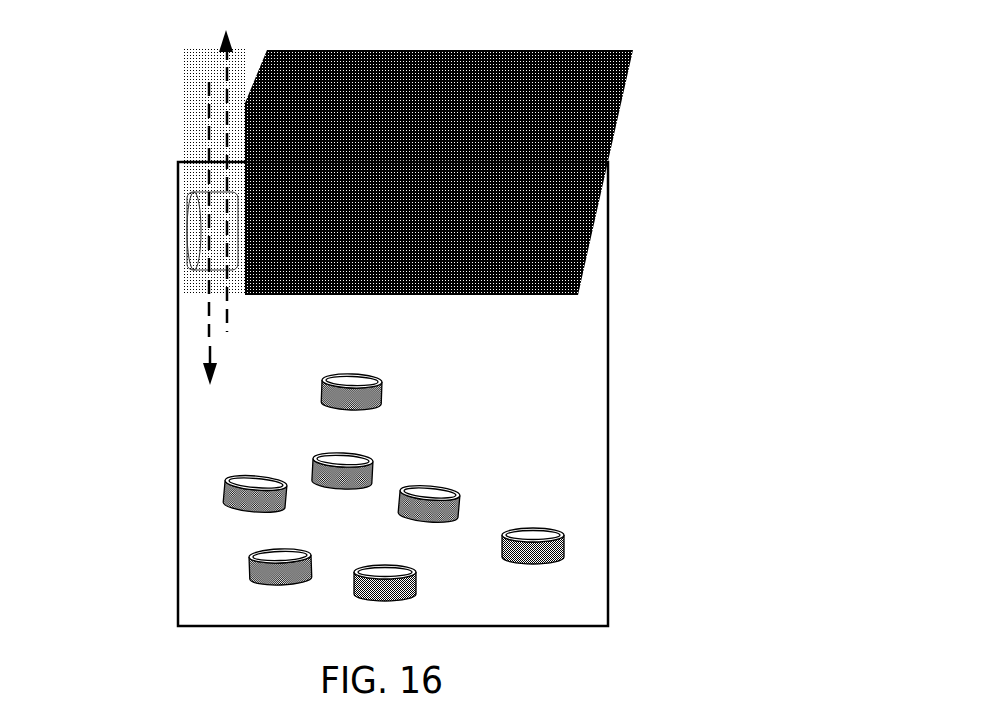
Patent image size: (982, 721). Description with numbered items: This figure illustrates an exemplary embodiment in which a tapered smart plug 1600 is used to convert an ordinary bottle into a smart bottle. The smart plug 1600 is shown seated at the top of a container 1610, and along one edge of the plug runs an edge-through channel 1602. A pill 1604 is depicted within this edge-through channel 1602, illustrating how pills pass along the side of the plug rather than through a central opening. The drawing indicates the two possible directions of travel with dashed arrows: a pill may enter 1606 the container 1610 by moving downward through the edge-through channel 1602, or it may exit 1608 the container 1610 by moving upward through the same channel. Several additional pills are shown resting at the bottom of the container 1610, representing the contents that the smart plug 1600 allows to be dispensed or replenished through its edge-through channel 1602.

The smart plug 1600 is at (641, 95).
The edge-through channel 1602 is at (180, 136).
The pill 1604 is at (203, 226).
The enter 1606 is at (210, 323).
The exit 1608 is at (224, 57).
The container 1610 is at (185, 461).